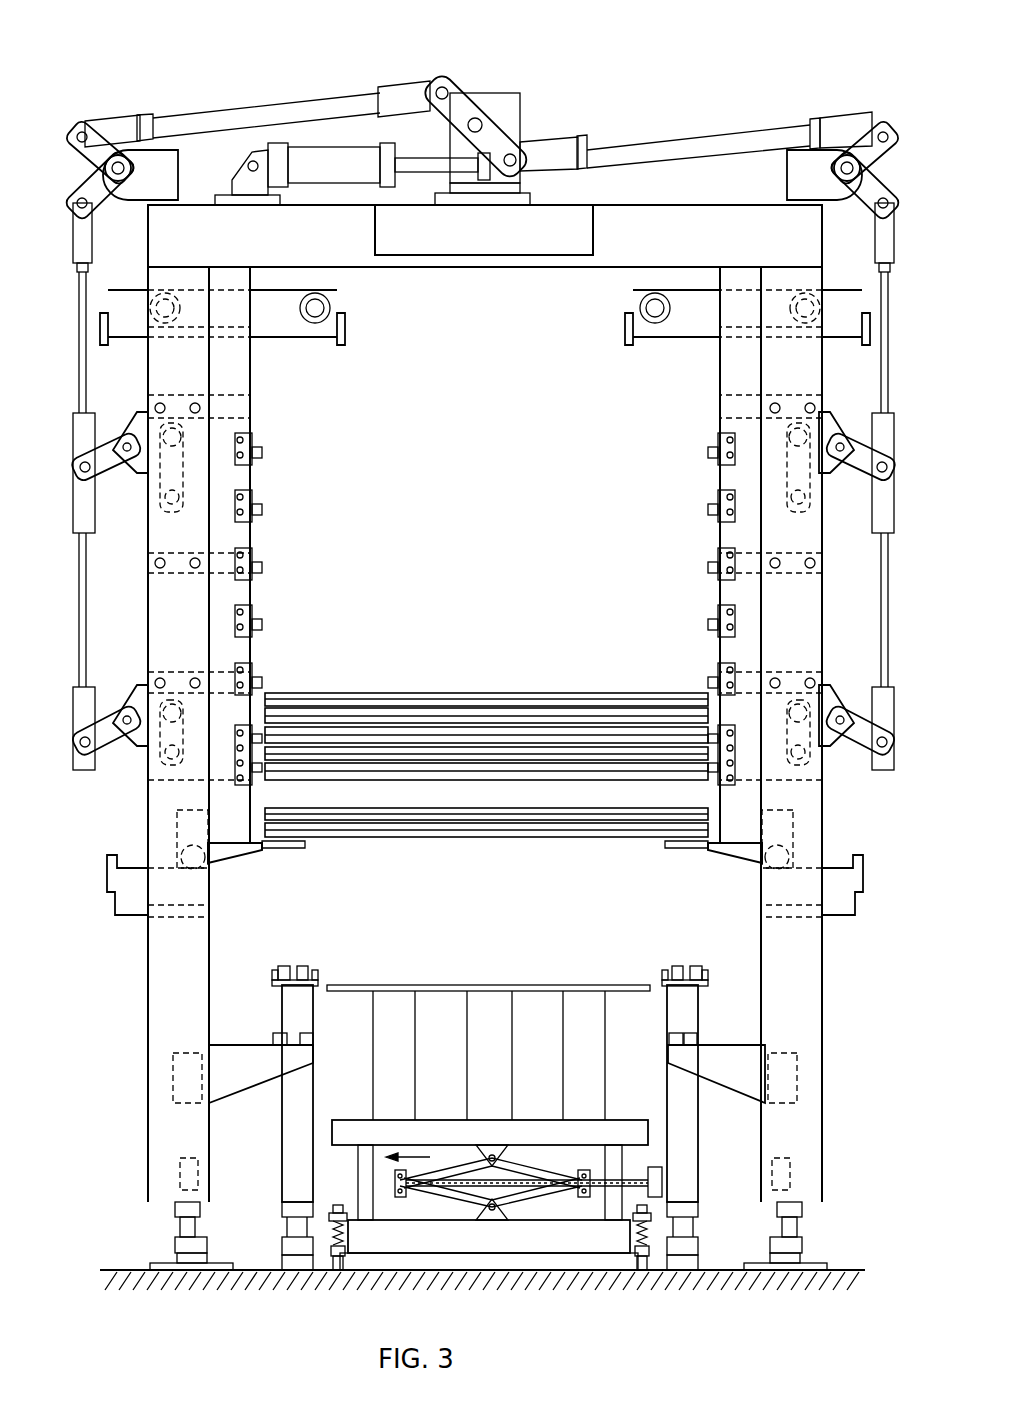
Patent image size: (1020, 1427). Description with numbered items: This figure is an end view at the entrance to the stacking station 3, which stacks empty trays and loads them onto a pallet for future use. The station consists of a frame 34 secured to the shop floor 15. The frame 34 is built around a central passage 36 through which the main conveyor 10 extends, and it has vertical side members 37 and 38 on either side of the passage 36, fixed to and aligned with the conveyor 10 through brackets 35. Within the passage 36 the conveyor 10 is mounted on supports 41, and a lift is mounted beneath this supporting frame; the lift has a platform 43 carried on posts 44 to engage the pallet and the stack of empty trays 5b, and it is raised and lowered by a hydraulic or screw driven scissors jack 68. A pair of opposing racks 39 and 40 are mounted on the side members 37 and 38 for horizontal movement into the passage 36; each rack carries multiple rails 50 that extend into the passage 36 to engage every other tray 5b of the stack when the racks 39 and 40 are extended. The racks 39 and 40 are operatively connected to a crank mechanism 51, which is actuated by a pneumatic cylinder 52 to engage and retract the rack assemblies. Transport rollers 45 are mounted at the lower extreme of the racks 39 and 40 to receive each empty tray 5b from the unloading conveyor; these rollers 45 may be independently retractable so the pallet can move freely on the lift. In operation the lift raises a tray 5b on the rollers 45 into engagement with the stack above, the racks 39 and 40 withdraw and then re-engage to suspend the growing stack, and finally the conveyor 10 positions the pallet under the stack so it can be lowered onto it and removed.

The stacking station 3 is at (122, 66).
The pneumatic cylinder 52 is at (330, 157).
The crank mechanism 51 is at (462, 110).
The frame 34 is at (712, 212).
The rack 40 is at (220, 370).
The rack 39 is at (752, 368).
The rails 50 is at (258, 452).
The vertical side member 38 is at (168, 608).
The vertical side member 37 is at (808, 640).
The empty tray 5b is at (698, 812).
The transport rollers 45 is at (681, 848).
The central passage 36 is at (570, 931).
The main conveyor 10 is at (290, 968).
The brackets 35 is at (245, 1052).
The platform 43 is at (445, 991).
The posts 44 is at (575, 1047).
The scissors jack 68 is at (568, 1146).
The supports 41 is at (312, 1195).
The shop floor 15 is at (845, 1270).